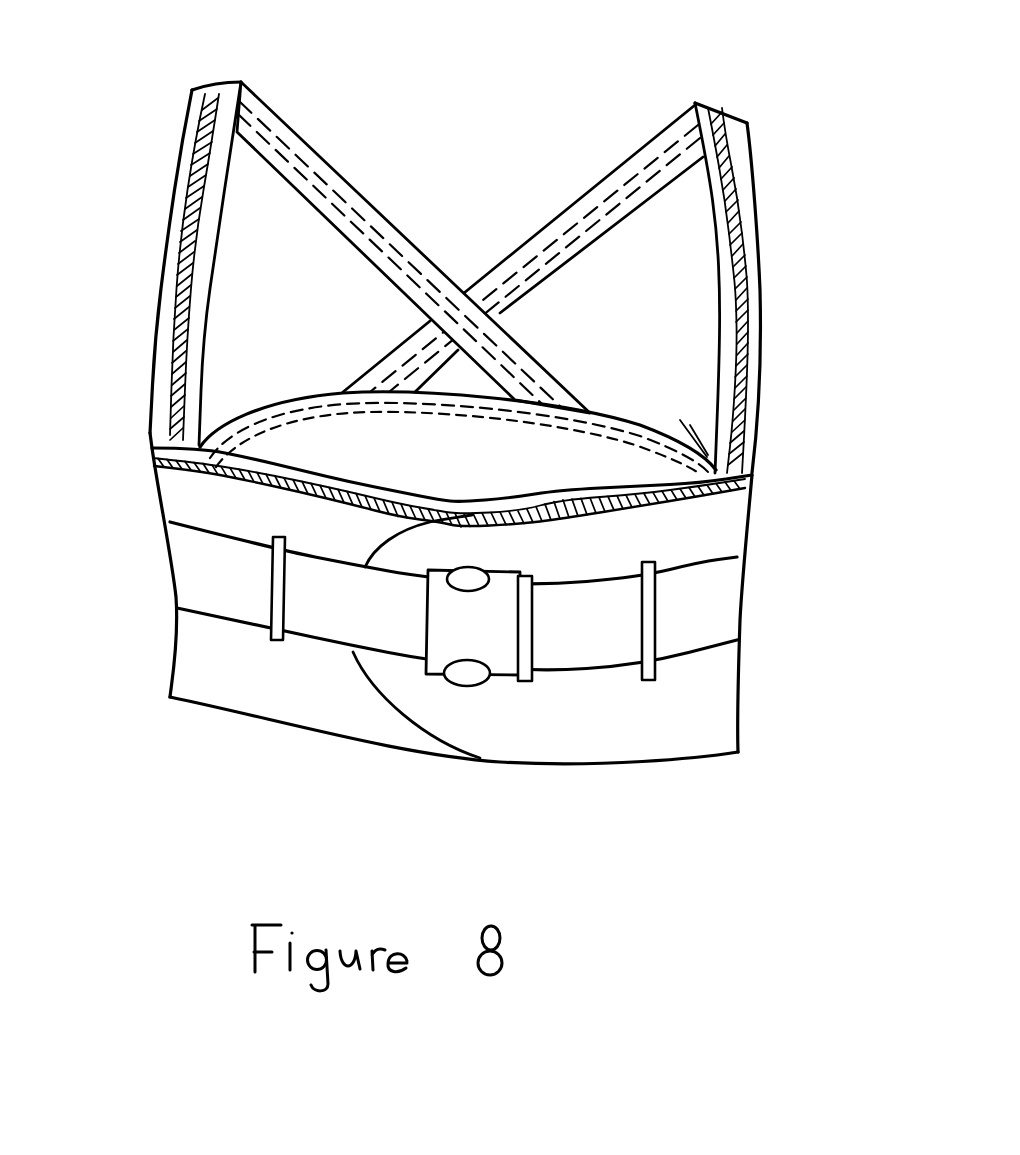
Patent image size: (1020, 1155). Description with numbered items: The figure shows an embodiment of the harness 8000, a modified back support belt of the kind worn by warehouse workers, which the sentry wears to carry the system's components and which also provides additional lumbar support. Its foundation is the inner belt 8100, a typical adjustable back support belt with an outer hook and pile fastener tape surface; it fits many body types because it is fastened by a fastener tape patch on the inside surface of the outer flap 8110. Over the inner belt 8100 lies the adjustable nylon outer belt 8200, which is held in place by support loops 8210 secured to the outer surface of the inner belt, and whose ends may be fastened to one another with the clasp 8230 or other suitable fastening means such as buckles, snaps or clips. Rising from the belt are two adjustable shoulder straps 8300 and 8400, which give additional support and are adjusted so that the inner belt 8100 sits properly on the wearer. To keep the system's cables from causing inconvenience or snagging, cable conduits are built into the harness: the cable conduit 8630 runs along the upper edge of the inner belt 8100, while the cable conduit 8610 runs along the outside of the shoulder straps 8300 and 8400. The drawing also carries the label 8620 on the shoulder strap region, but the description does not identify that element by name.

The harness 8000 is at (432, 48).
The inner belt 8100 is at (710, 532).
The outer flap 8110 is at (353, 658).
The outer belt 8200 is at (703, 610).
The support loops 8210 is at (275, 636).
The clasp 8230 is at (447, 627).
The shoulder strap 8300 is at (762, 257).
The shoulder strap 8400 is at (232, 224).
The cable conduit 8610 is at (180, 242).
The right strap pad 8620 is at (748, 323).
The cable conduit 8630 is at (537, 530).